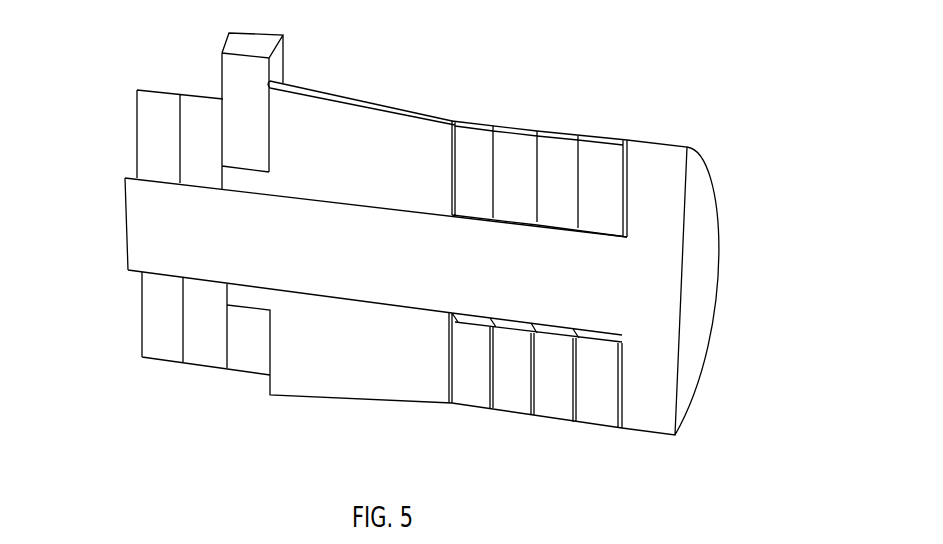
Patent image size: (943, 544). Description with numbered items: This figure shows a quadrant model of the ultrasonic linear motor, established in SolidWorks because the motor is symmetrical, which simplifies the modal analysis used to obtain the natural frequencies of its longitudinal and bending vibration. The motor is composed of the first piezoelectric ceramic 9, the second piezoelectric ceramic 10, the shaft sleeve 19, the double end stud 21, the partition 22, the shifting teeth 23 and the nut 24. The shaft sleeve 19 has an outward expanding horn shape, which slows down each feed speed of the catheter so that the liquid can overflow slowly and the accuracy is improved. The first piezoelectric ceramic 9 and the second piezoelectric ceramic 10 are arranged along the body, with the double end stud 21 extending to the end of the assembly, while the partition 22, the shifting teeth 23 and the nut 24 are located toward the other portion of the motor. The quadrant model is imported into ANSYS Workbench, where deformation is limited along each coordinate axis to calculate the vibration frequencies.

The first piezoelectric ceramic 9 is at (501, 142).
The second piezoelectric ceramic 10 is at (585, 144).
The shaft sleeve 19 is at (379, 139).
The double end stud 21 is at (641, 420).
The partition 22 is at (437, 411).
The shifting teeth 23 is at (247, 361).
The nut 24 is at (188, 357).